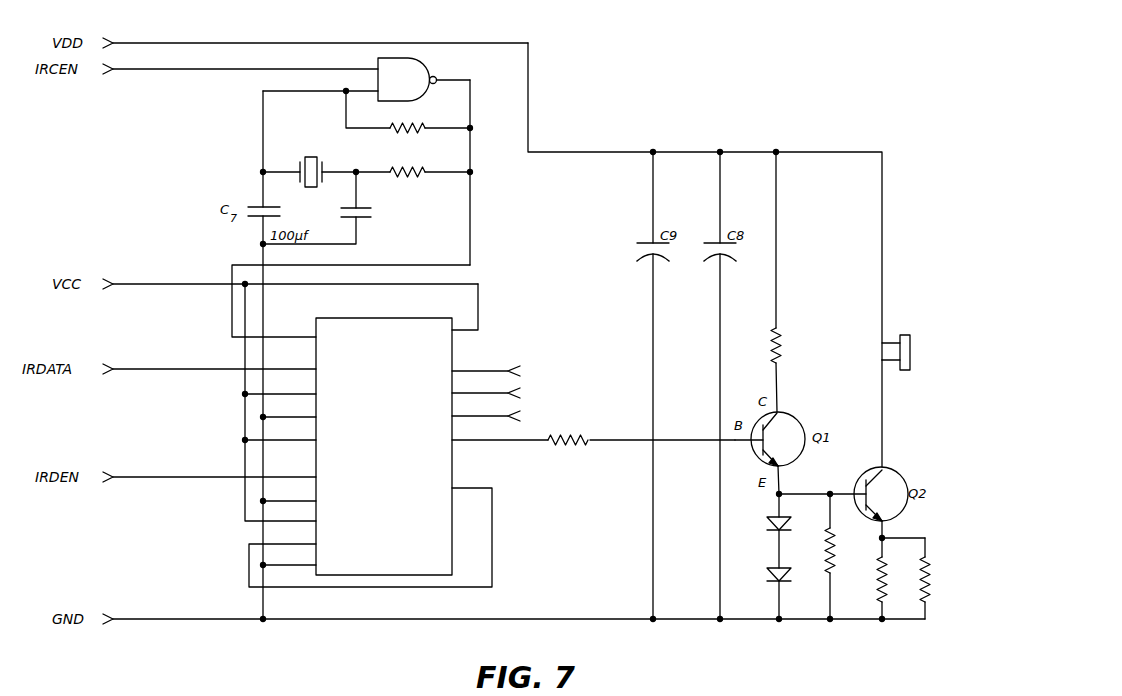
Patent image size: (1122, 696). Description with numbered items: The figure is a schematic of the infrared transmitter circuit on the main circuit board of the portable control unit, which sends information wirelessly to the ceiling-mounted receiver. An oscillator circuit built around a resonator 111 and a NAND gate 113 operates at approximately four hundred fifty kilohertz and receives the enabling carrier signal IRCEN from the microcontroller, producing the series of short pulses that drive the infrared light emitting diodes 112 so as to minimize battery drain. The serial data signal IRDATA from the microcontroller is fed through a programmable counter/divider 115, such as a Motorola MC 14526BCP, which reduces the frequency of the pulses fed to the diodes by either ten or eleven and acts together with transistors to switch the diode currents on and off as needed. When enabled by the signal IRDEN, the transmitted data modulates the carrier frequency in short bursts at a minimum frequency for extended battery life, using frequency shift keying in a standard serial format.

The resonator 111 is at (293, 187).
The infrared light emitting diodes 112 is at (905, 333).
The NAND gate 113 is at (412, 65).
The programmable counter/divider 115 is at (443, 547).